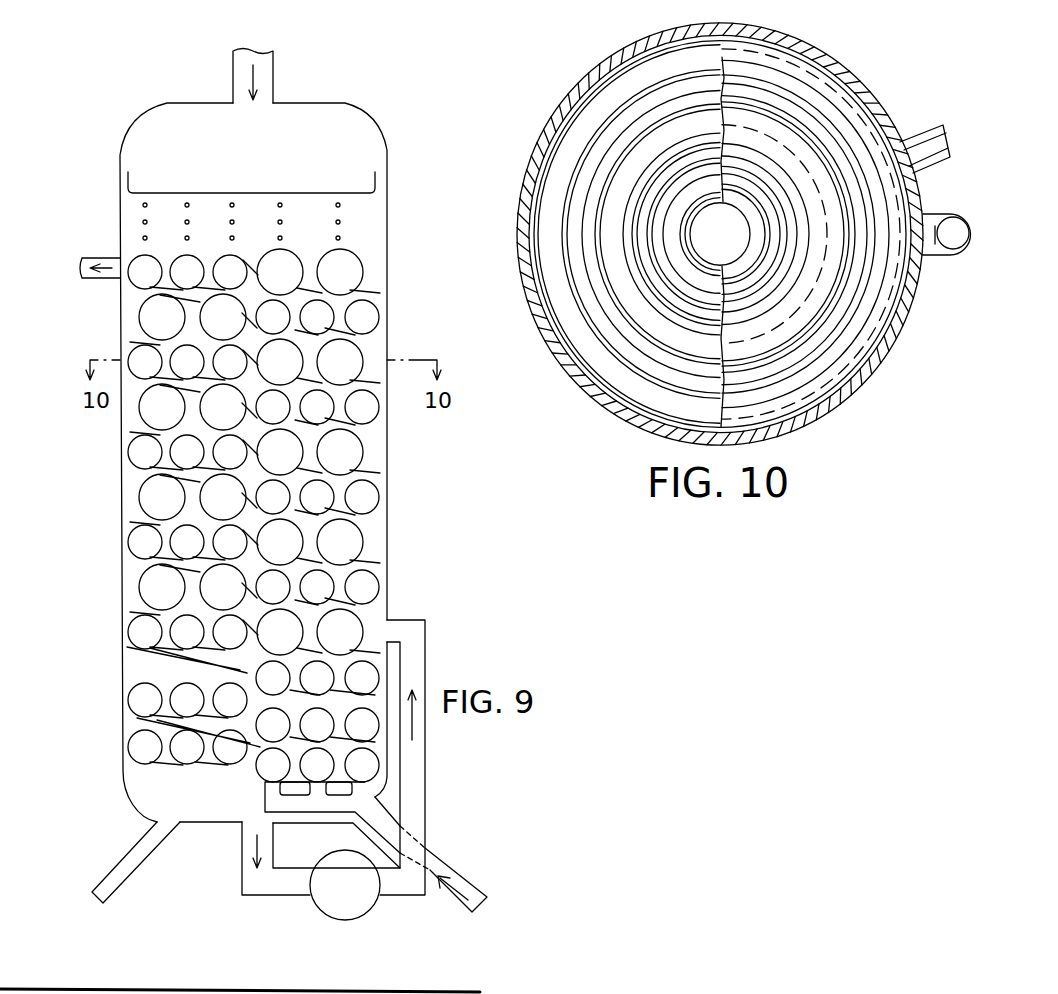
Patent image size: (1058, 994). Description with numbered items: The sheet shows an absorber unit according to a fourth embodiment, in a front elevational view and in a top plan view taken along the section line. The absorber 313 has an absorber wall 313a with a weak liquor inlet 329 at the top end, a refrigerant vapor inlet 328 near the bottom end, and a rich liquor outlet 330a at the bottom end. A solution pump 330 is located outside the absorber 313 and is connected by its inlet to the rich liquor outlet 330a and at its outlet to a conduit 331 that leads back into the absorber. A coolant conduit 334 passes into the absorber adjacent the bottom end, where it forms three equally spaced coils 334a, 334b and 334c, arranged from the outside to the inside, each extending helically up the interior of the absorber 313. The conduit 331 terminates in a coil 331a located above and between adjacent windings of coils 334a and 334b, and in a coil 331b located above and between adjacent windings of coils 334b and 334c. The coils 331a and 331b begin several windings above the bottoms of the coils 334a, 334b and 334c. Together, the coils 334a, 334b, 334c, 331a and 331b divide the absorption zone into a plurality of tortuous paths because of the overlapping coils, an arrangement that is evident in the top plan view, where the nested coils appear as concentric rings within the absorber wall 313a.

In FIG. 9, the absorber 313 is at (370, 118).
In FIG. 10, the absorber wall 313a is at (642, 422).
In FIG. 9, the refrigerant vapor inlet 328 is at (147, 847).
In FIG. 9, the weak liquor inlet 329 is at (270, 83).
In FIG. 9, the solution pump 330 is at (345, 885).
In FIG. 9, the rich liquor outlet 330a is at (245, 837).
In FIG. 9, the conduit 331 is at (420, 647).
In FIG. 10, the conduit 331 is at (953, 255).
In FIG. 9, the coil 331a is at (357, 252).
In FIG. 10, the coil 331a is at (827, 335).
In FIG. 9, the coil 331b is at (290, 252).
In FIG. 10, the coil 331b is at (757, 297).
In FIG. 9, the coolant conduit 334 is at (440, 863).
In FIG. 10, the coolant conduit 334 is at (920, 145).
In FIG. 9, the coil 334a is at (148, 263).
In FIG. 10, the coil 334a is at (572, 140).
In FIG. 9, the coil 334b is at (188, 263).
In FIG. 10, the coil 334b is at (613, 187).
In FIG. 9, the coil 334c is at (238, 263).
In FIG. 10, the coil 334c is at (692, 182).